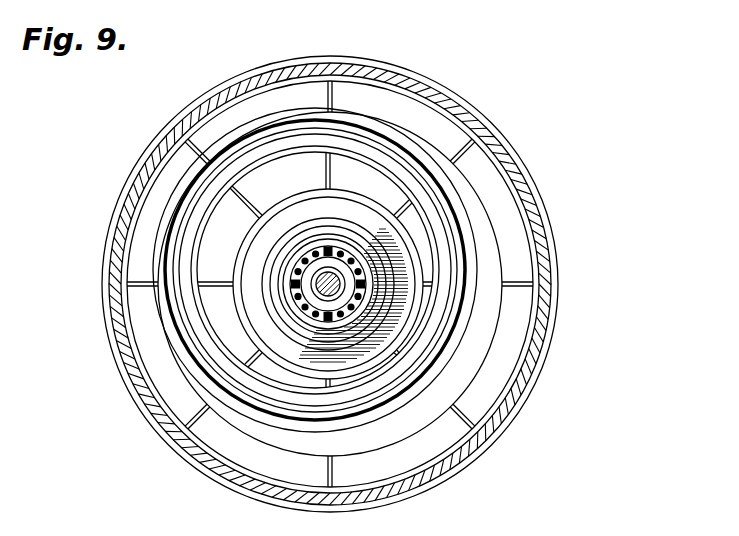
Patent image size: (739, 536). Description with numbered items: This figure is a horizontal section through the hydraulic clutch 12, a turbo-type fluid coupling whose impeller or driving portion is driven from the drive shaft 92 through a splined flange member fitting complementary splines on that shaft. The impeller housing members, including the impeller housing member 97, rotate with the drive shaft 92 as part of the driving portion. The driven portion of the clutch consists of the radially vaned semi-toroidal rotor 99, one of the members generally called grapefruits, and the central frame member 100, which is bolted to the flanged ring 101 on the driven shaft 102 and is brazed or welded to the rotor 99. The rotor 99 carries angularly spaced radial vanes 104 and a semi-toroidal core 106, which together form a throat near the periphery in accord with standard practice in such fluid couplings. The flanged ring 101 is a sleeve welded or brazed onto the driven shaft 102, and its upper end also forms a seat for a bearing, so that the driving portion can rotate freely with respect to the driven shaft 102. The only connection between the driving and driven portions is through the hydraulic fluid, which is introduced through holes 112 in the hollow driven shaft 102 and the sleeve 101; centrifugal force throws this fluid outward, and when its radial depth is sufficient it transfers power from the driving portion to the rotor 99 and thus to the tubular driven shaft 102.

The hydraulic clutch 12 is at (528, 173).
The drive shaft 92 is at (390, 262).
The impeller housing member 97 is at (547, 252).
The rotor 99 is at (157, 343).
The central frame member 100 is at (271, 285).
The flanged ring 101 is at (288, 302).
The driven shaft 102 is at (306, 250).
The radial vanes 104 is at (470, 155).
The semi-toroidal core 106 is at (482, 238).
The holes 112 is at (333, 245).